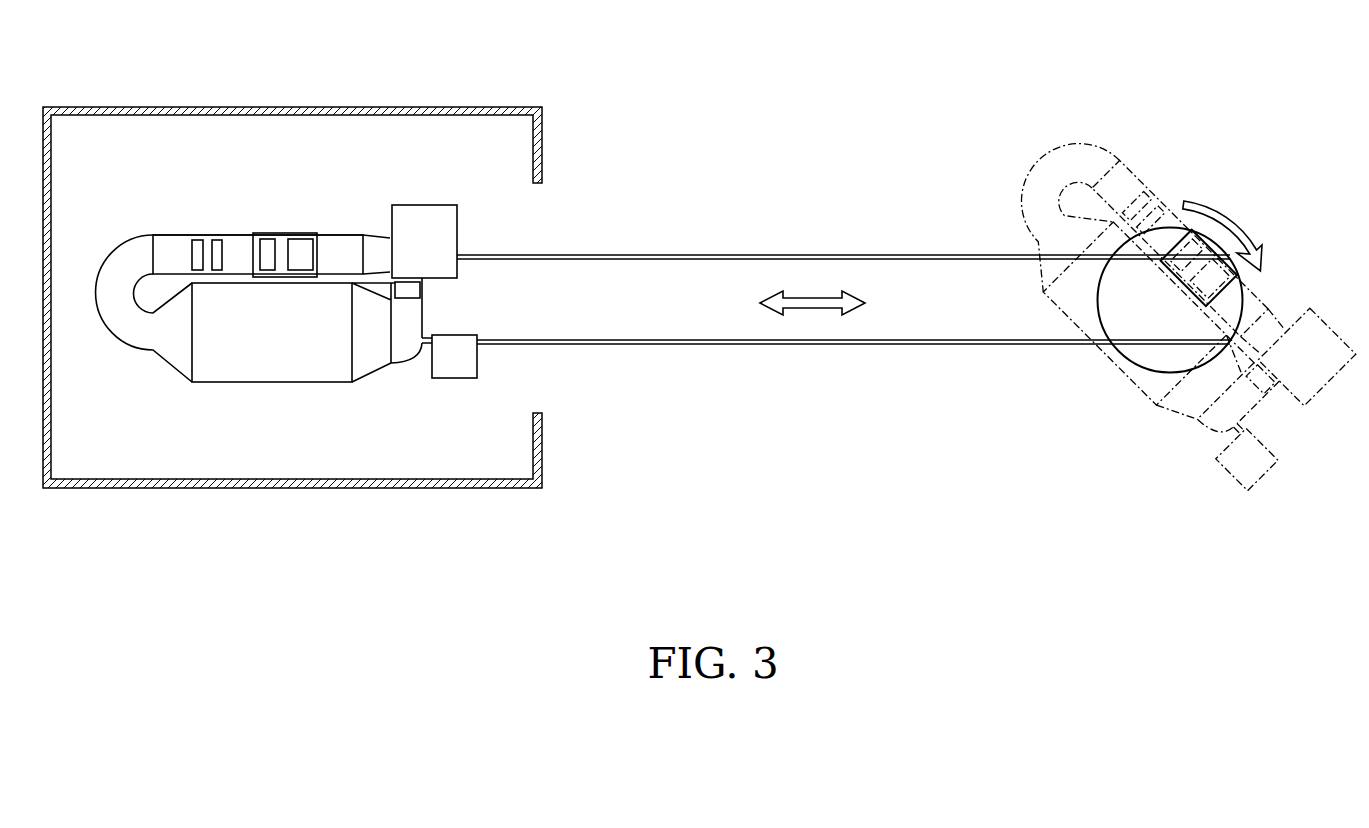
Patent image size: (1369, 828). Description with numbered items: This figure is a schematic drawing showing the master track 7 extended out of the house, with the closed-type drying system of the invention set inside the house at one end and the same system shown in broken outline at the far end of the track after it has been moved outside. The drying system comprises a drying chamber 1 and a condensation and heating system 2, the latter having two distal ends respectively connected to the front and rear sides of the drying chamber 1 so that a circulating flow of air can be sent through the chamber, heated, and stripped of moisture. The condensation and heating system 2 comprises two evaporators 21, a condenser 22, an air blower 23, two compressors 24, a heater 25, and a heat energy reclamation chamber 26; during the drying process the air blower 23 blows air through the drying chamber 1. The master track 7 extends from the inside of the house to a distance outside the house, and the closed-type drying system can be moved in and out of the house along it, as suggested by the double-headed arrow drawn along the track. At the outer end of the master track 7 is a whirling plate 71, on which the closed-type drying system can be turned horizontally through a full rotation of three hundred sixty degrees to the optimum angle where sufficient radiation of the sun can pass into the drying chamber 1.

The drying chamber 1 is at (292, 358).
The condensation and heating system 2 is at (236, 240).
The master track 7 is at (735, 255).
The evaporator 21 is at (214, 243).
The condenser 22 is at (269, 243).
The air blower 23 is at (450, 226).
The compressor 24 is at (300, 247).
The heater 25 is at (421, 292).
The heat energy reclamation chamber 26 is at (282, 245).
The whirling plate 71 is at (1142, 357).